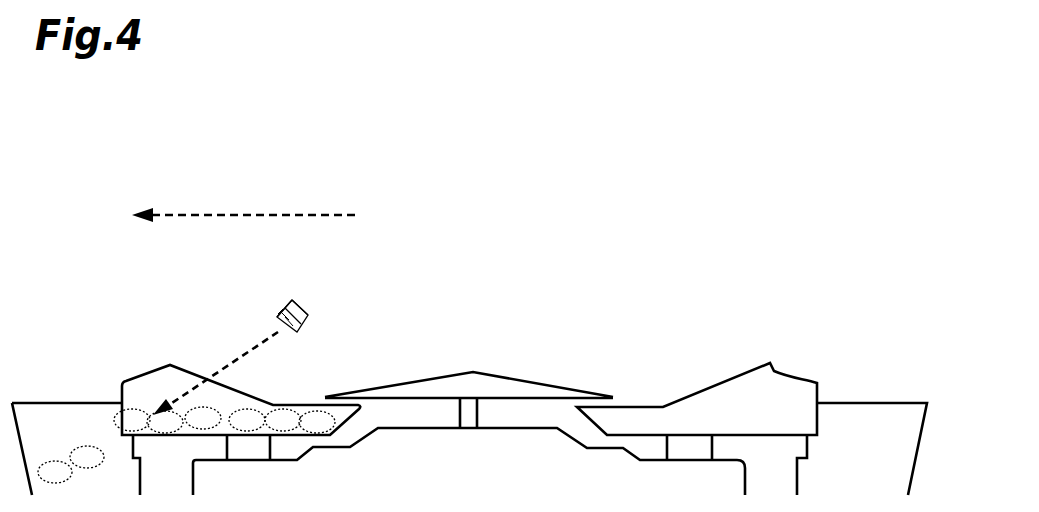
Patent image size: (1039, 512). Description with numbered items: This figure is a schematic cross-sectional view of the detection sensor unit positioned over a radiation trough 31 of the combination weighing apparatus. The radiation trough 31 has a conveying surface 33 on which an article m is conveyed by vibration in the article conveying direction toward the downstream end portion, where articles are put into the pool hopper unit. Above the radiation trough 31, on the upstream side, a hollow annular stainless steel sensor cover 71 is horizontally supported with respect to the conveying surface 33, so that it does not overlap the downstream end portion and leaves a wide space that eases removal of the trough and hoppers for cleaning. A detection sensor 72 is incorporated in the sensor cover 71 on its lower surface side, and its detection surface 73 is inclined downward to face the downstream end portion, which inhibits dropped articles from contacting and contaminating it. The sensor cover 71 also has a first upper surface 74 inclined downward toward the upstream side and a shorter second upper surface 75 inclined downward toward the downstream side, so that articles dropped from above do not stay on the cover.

The radiation trough 31 is at (170, 381).
The conveying surface 33 is at (160, 432).
The article m is at (317, 423).
The sensor cover 71 is at (306, 316).
The detection sensor 72 is at (298, 337).
The detection surface 73 is at (278, 322).
The first upper surface 74 is at (290, 300).
The second upper surface 75 is at (282, 307).